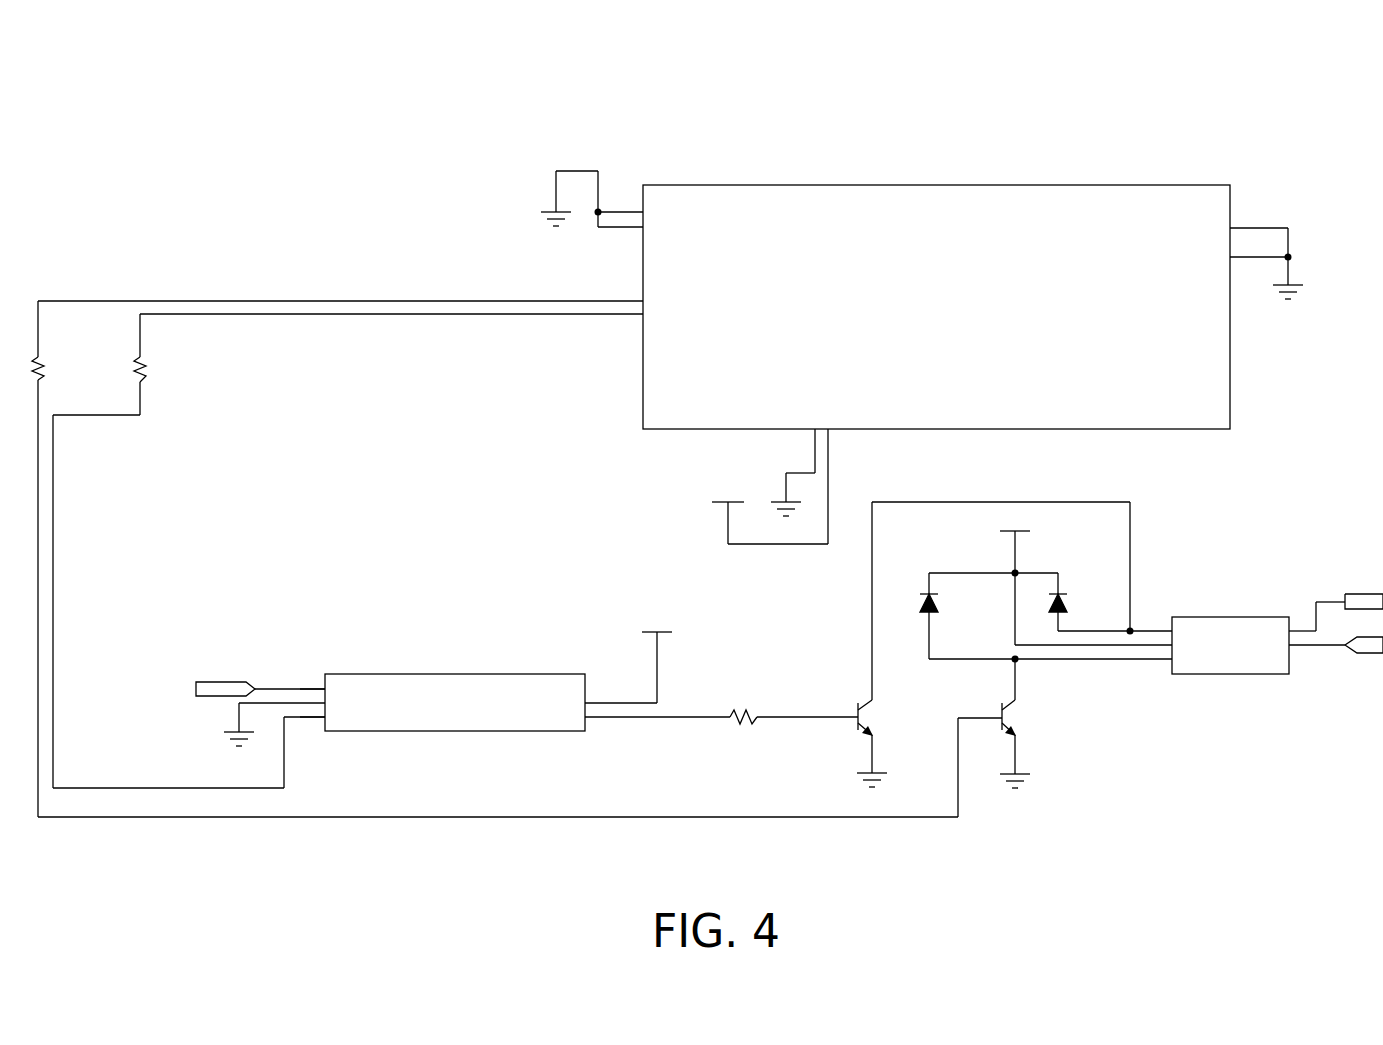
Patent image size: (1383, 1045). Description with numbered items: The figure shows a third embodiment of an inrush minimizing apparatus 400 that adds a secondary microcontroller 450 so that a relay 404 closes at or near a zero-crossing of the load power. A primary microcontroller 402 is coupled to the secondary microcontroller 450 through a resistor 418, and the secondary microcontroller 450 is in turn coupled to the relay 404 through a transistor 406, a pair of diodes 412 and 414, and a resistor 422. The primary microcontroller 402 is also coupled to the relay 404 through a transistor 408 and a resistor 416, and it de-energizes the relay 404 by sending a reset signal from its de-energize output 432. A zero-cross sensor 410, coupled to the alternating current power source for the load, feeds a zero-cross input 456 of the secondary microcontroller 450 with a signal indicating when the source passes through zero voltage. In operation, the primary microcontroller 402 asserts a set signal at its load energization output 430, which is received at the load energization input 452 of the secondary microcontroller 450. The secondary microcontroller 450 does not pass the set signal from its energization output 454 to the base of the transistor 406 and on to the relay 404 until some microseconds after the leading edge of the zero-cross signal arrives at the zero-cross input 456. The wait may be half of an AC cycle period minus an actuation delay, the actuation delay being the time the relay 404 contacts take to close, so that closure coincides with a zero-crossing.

The inrush minimizing apparatus 400 is at (1220, 83).
The primary microcontroller 402 is at (920, 277).
The relay 404 is at (1225, 676).
The transistor 406 is at (857, 709).
The transistor 408 is at (1001, 709).
The zero-cross sensor 410 is at (208, 680).
The diode 412 is at (928, 592).
The diode 414 is at (1060, 593).
The resistor 416 is at (40, 360).
The resistor 418 is at (142, 378).
The resistor 422 is at (742, 723).
The load energization output 430 is at (643, 316).
The de-energize output 432 is at (642, 300).
The secondary microcontroller 450 is at (480, 715).
The load energization input 452 is at (322, 732).
The energization output 454 is at (586, 731).
The zero-cross input 456 is at (326, 676).